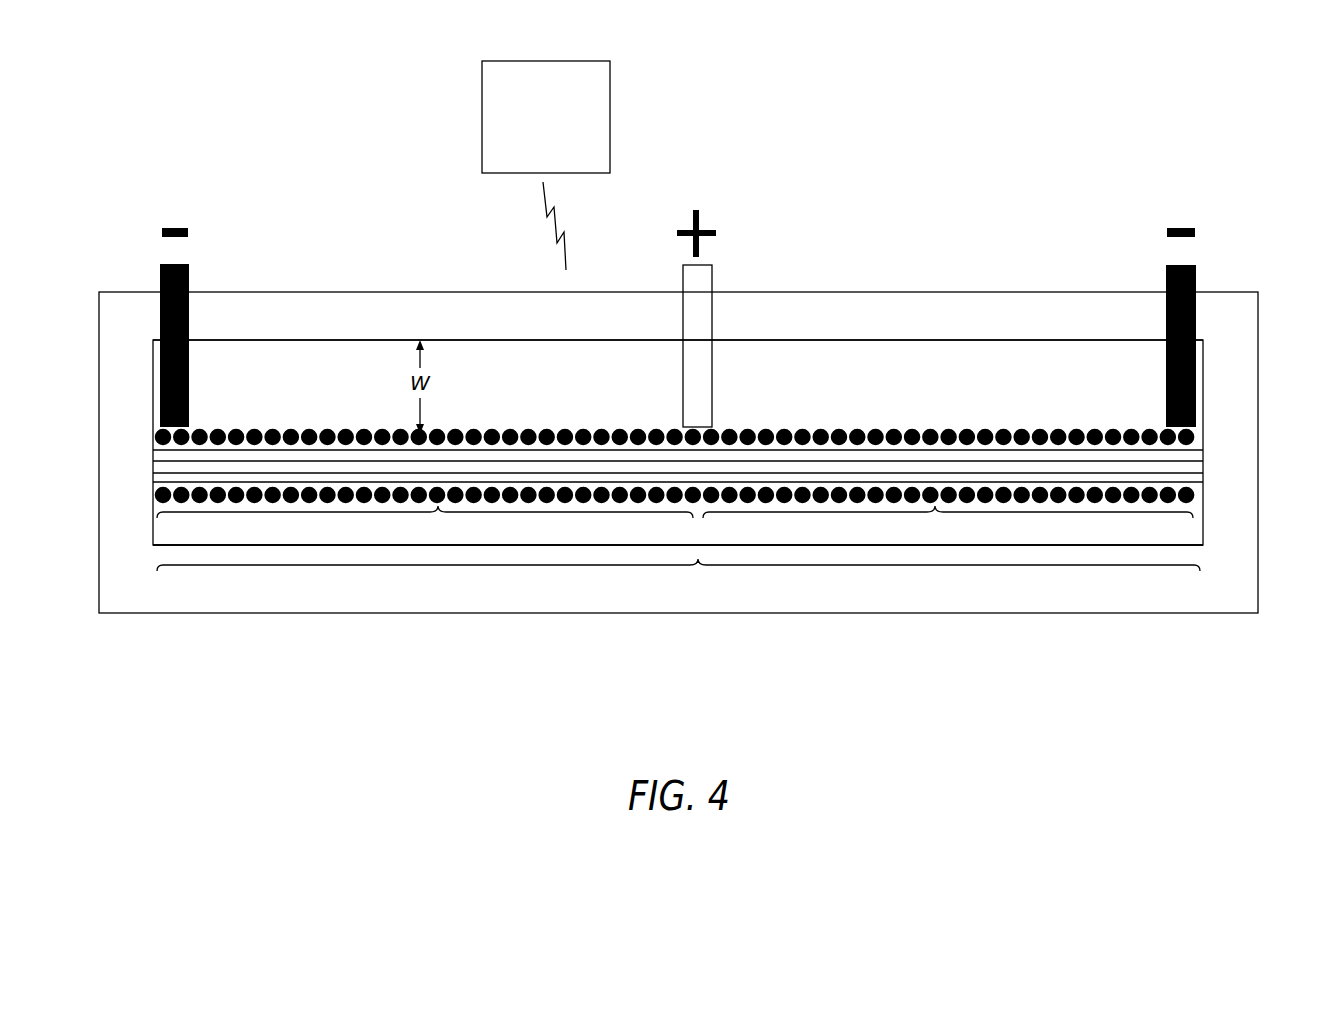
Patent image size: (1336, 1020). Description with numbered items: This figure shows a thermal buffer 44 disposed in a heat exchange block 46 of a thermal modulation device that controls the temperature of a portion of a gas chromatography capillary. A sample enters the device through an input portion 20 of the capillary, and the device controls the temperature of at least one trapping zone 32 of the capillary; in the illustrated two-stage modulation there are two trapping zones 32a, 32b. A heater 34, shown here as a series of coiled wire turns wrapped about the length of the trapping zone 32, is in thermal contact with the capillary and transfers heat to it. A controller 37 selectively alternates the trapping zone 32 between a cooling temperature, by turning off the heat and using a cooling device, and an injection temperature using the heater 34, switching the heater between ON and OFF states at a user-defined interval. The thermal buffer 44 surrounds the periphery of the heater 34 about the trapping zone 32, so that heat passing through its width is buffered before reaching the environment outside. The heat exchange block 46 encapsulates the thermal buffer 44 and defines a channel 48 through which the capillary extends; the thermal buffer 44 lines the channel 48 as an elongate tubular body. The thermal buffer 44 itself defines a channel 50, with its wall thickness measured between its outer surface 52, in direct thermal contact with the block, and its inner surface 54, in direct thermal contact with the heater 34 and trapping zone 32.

The input portion 20 is at (355, 472).
The trapping zone 32 is at (678, 579).
The first trapping zone 32a is at (425, 525).
The second trapping zone 32b is at (948, 525).
The heater 34 is at (310, 437).
The controller 37 is at (536, 128).
The thermal buffer 44 is at (827, 385).
The heat exchange block 46 is at (1212, 588).
The channel 48 is at (1075, 547).
The channel 50 is at (1203, 480).
The outer surface 52 is at (995, 545).
The inner surface 54 is at (966, 488).